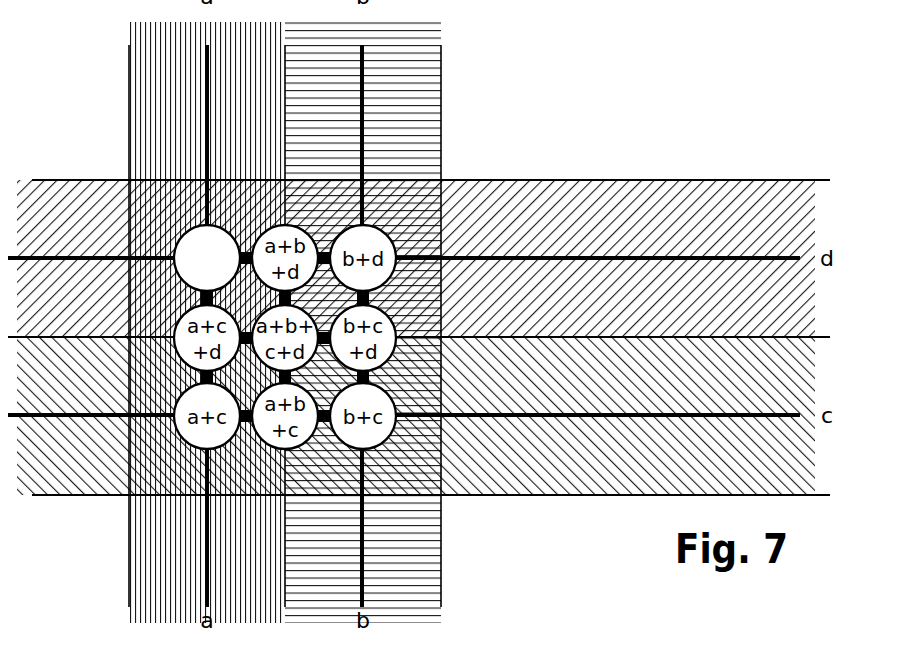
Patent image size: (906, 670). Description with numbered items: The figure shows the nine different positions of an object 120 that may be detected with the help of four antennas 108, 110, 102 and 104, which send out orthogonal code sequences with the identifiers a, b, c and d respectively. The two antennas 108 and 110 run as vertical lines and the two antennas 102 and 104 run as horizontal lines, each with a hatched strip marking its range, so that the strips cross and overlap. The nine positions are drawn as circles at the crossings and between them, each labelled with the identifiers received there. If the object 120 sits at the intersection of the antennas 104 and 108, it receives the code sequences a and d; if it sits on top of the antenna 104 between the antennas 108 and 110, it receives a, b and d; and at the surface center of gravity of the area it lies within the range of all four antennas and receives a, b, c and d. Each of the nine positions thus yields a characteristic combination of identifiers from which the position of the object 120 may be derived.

The object 120 is at (182, 234).
The antenna 104 is at (690, 256).
The antenna 102 is at (690, 413).
The antenna 108 is at (210, 562).
The antenna 110 is at (366, 562).